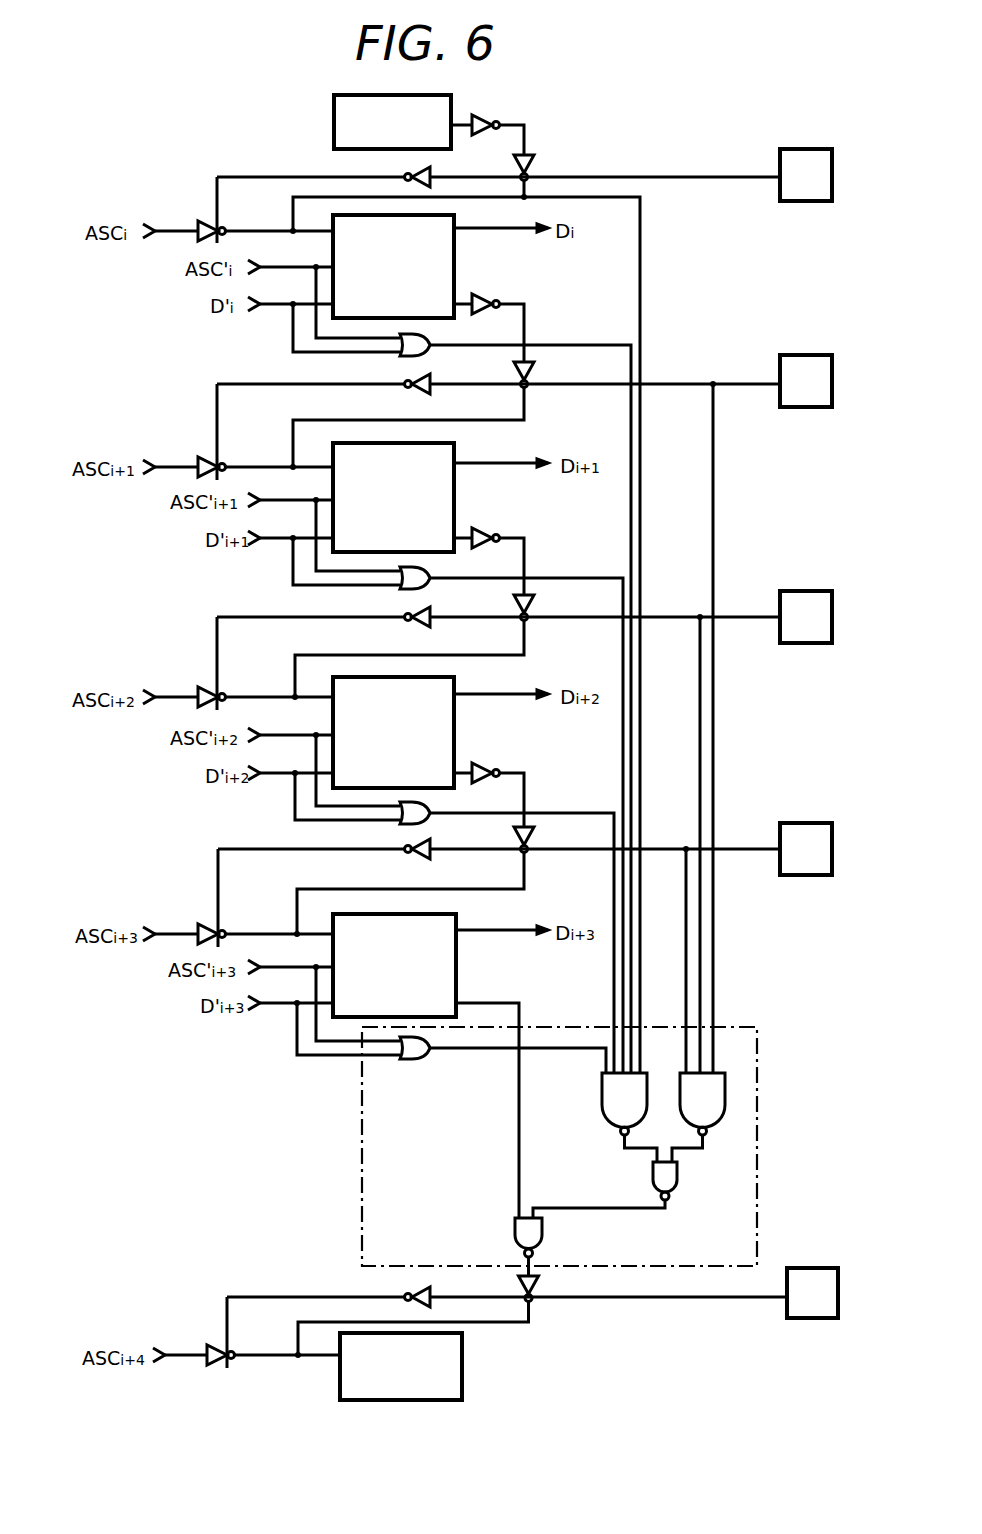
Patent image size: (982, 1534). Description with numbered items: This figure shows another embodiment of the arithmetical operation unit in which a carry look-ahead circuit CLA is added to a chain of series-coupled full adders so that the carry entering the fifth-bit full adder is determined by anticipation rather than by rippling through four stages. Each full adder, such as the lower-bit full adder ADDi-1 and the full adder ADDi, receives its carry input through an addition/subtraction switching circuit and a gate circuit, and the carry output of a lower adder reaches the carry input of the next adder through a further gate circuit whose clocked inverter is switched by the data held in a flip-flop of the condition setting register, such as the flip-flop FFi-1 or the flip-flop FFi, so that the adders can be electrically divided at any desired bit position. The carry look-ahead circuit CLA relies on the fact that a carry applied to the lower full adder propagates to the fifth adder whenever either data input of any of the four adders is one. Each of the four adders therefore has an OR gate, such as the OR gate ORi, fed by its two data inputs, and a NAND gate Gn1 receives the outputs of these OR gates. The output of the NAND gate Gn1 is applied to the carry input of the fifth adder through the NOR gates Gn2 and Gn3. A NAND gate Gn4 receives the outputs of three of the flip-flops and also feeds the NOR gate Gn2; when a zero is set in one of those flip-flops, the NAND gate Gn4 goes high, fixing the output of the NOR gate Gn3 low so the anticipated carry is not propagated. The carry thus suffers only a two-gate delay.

The full adder ADDi-1 is at (392, 122).
The full adder ADDi is at (393, 266).
The flip-flop FFi-1 is at (803, 149).
The flip-flop FFi is at (805, 355).
The OR gate ORi is at (415, 334).
The NAND gate Gn1 is at (602, 1100).
The NOR gate Gn2 is at (678, 1180).
The NOR gate Gn3 is at (542, 1230).
The NAND gate Gn4 is at (725, 1095).
The carry look-ahead circuit CLA is at (758, 1173).